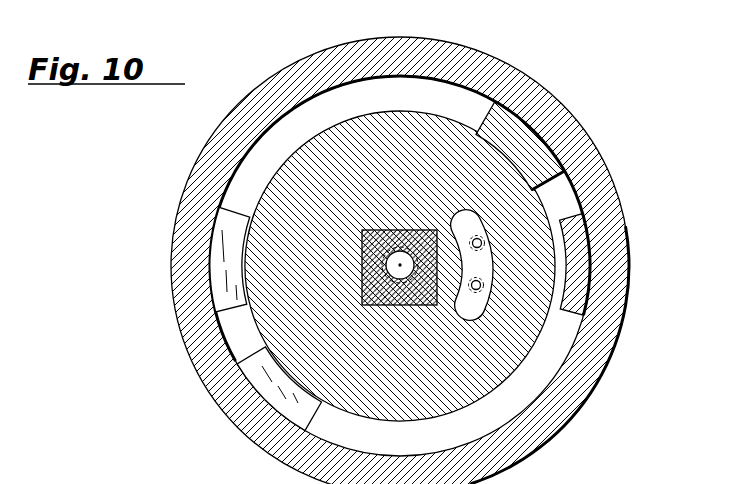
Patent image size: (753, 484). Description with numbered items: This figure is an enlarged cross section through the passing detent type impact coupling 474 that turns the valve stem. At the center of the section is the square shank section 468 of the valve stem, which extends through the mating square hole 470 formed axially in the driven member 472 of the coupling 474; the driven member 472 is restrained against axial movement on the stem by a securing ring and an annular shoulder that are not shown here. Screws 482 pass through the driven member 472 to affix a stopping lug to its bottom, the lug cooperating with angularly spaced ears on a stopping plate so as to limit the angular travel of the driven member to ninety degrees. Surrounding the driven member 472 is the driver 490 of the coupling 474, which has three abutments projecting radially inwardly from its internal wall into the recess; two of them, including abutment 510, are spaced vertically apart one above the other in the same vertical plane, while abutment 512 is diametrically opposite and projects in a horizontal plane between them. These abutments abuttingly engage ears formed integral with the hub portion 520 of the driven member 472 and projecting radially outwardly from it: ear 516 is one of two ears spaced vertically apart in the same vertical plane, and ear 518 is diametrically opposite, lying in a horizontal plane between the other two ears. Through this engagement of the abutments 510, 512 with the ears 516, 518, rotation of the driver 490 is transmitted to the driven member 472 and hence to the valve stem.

The square shank section 468 is at (368, 306).
The square hole 470 is at (362, 233).
The driven member 472 is at (393, 106).
The passing detent type impact coupling 474 is at (549, 73).
The screws 482 is at (484, 244).
The driver 490 is at (600, 158).
The abutment 510 is at (584, 222).
The abutment 512 is at (227, 222).
The ear 516 is at (535, 133).
The ear 518 is at (253, 356).
The hub portion 520 is at (434, 422).